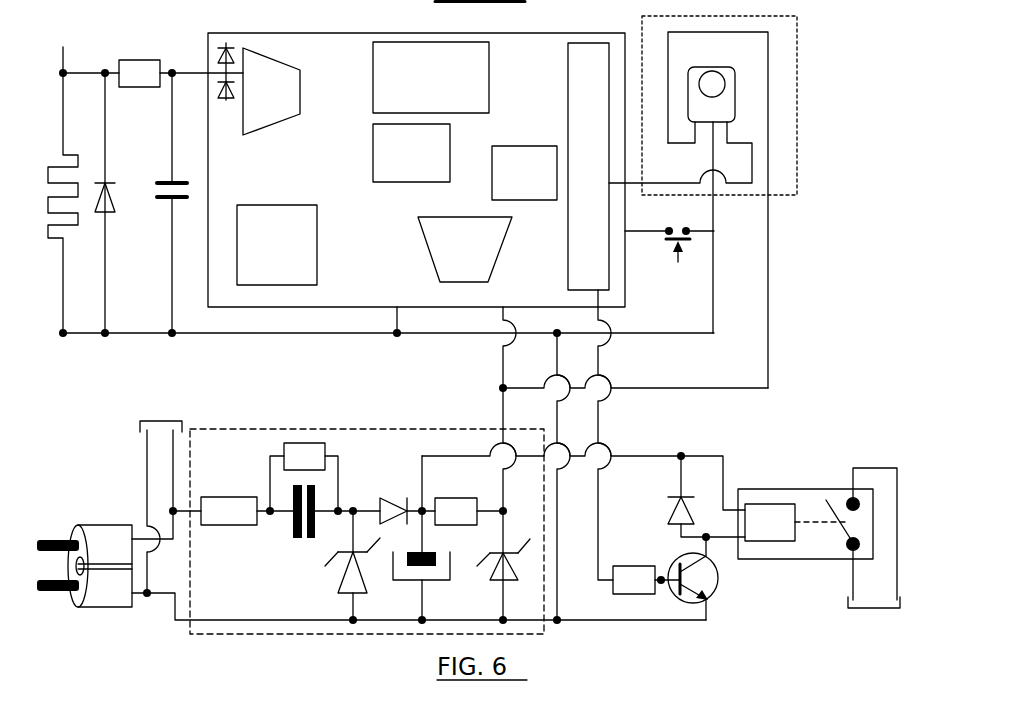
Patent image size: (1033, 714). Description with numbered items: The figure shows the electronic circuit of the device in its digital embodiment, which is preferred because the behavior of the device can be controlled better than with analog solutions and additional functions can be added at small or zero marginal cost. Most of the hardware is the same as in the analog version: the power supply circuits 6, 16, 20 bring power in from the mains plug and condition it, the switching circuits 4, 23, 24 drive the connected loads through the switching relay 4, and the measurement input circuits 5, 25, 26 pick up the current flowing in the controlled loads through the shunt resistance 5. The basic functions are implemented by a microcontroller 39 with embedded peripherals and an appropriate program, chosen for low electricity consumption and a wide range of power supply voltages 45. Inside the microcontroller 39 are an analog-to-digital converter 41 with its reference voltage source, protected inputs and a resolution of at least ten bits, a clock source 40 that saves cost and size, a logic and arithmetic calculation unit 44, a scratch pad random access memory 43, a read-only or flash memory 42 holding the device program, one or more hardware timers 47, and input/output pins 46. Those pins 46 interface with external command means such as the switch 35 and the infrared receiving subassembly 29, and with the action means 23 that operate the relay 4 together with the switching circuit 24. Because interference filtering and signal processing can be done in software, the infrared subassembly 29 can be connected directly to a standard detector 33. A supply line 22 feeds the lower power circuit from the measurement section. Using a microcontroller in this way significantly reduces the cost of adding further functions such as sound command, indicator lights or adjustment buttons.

The switching relay 4 is at (803, 489).
The shunt resistance 5 is at (54, 165).
The power supply circuit 6 is at (118, 607).
The power supply circuit 16 is at (161, 421).
The power supply circuit 20 is at (390, 429).
The supply line 22 is at (503, 405).
The switching circuit 23 is at (670, 506).
The switching circuit 24 is at (873, 610).
The measurement input circuit 25 is at (168, 181).
The measurement input circuit 26 is at (117, 210).
The subassembly for receiving infrared signals 29 is at (731, 202).
The standard detector 33 is at (745, 50).
The external command means 35 is at (678, 262).
The microcontroller 39 is at (258, 33).
The clock source 40 is at (270, 205).
The analog-to-digital converter 41 is at (300, 105).
The read-only memory or flash memory 42 is at (373, 63).
The scratch pad random access memory 43 is at (381, 182).
The logic and arithmetic calculation unit 44 is at (418, 250).
The power supply voltages 45 is at (503, 307).
The input/output pins 46 is at (568, 264).
The hardware timers 47 is at (550, 146).